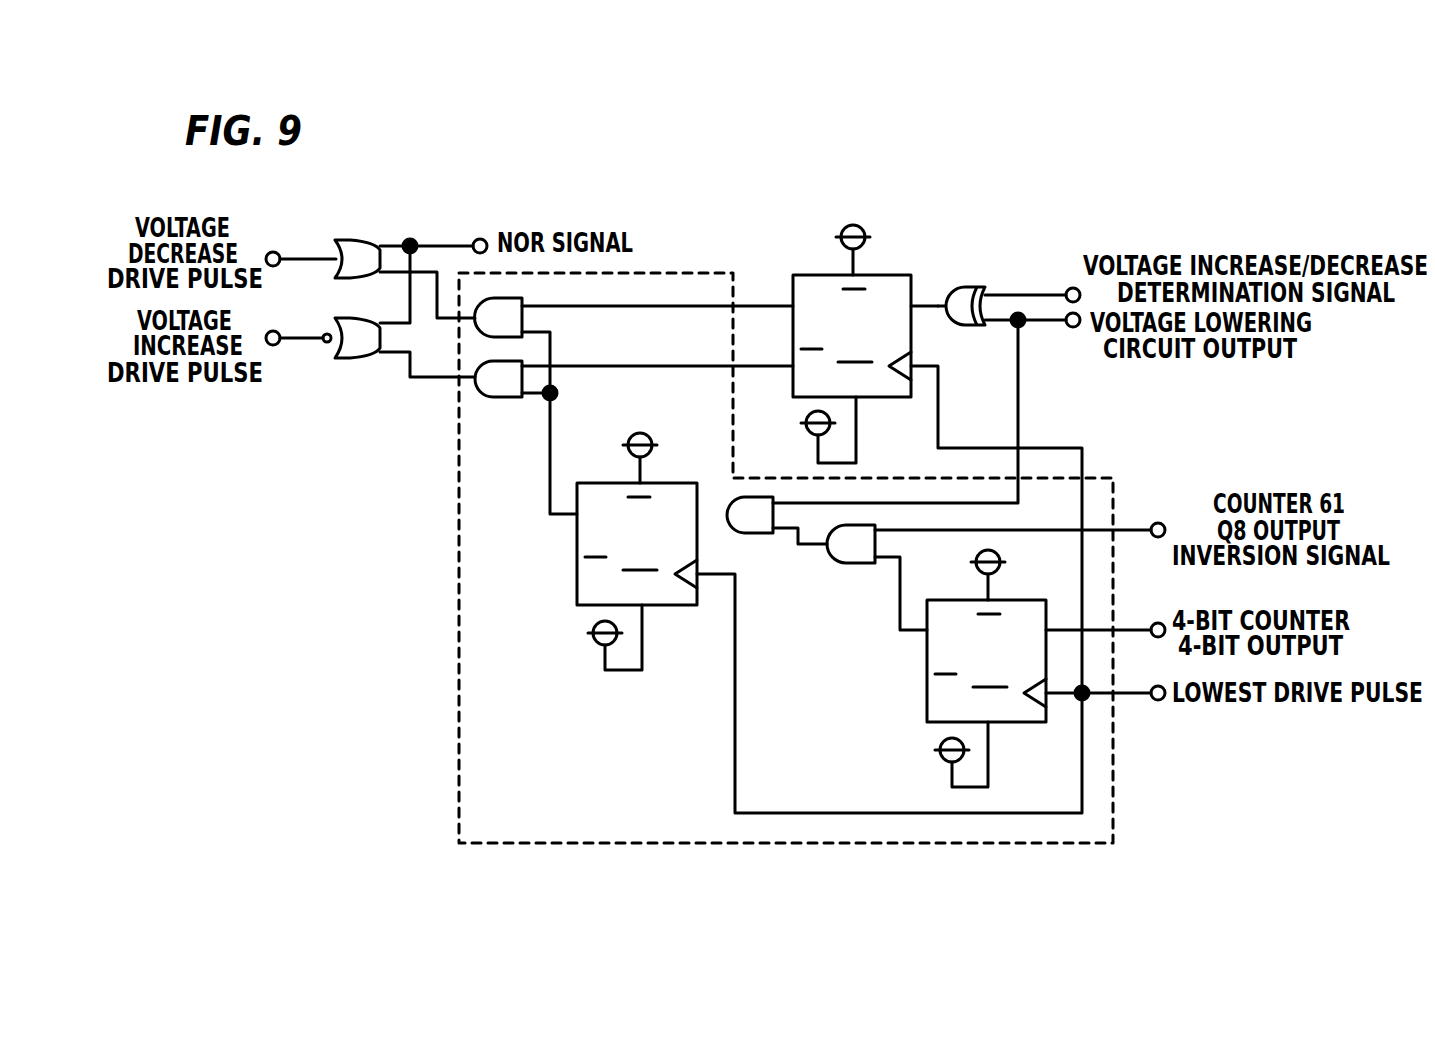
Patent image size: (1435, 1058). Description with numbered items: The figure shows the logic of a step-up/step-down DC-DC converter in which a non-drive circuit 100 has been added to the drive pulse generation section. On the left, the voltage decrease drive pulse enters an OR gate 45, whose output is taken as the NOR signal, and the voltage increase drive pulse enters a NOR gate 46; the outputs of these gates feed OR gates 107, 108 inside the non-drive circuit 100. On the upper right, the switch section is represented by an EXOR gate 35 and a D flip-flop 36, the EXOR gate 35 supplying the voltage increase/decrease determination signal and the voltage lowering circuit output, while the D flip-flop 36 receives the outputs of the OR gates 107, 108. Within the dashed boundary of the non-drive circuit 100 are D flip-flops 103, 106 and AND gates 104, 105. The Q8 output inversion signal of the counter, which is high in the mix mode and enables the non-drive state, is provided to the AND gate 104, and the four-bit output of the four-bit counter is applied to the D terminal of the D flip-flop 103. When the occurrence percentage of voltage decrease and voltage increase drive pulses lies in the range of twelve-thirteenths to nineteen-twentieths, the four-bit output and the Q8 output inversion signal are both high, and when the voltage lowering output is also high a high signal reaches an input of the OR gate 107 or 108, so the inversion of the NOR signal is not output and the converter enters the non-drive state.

The OR gate 45 is at (372, 238).
The NOR gate 46 is at (355, 358).
The D flip-flop 36 is at (806, 275).
The EXOR gate 35 is at (973, 287).
The OR gate 107 is at (478, 338).
The OR gate 108 is at (492, 397).
The AND gate 105 is at (760, 533).
The AND gate 104 is at (858, 563).
The D flip-flop 106 is at (668, 605).
The D flip-flop 103 is at (1022, 600).
The non-drive circuit 100 is at (458, 692).